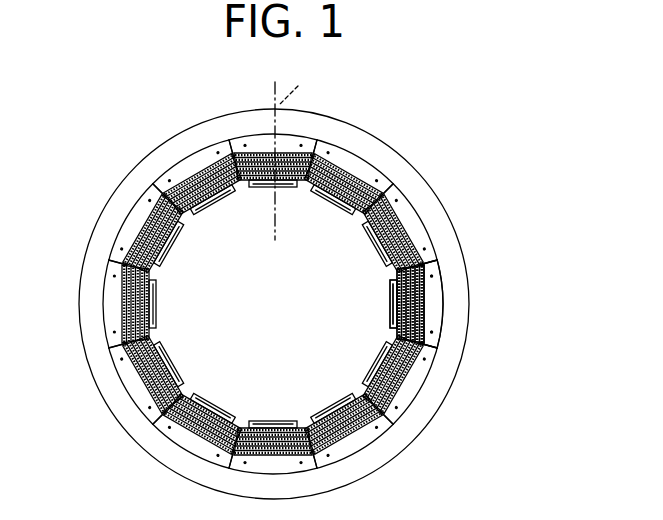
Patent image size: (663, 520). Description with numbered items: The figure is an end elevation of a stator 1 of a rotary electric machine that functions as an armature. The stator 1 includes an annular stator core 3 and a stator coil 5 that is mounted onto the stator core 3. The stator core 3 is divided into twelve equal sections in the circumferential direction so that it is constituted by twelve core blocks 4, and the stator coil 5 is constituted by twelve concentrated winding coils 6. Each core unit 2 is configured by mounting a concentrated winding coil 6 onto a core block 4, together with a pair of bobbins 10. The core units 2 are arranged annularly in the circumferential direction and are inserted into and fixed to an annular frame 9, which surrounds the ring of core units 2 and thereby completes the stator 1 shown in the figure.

The stator 1 is at (67, 96).
The annular frame 9 is at (118, 197).
The stator core 3 is at (416, 213).
The stator coil 5 is at (410, 248).
The core unit 2 is at (477, 307).
The core block 4 is at (440, 304).
The concentrated winding coil 6 is at (420, 291).
The bobbin 10 is at (532, 252).